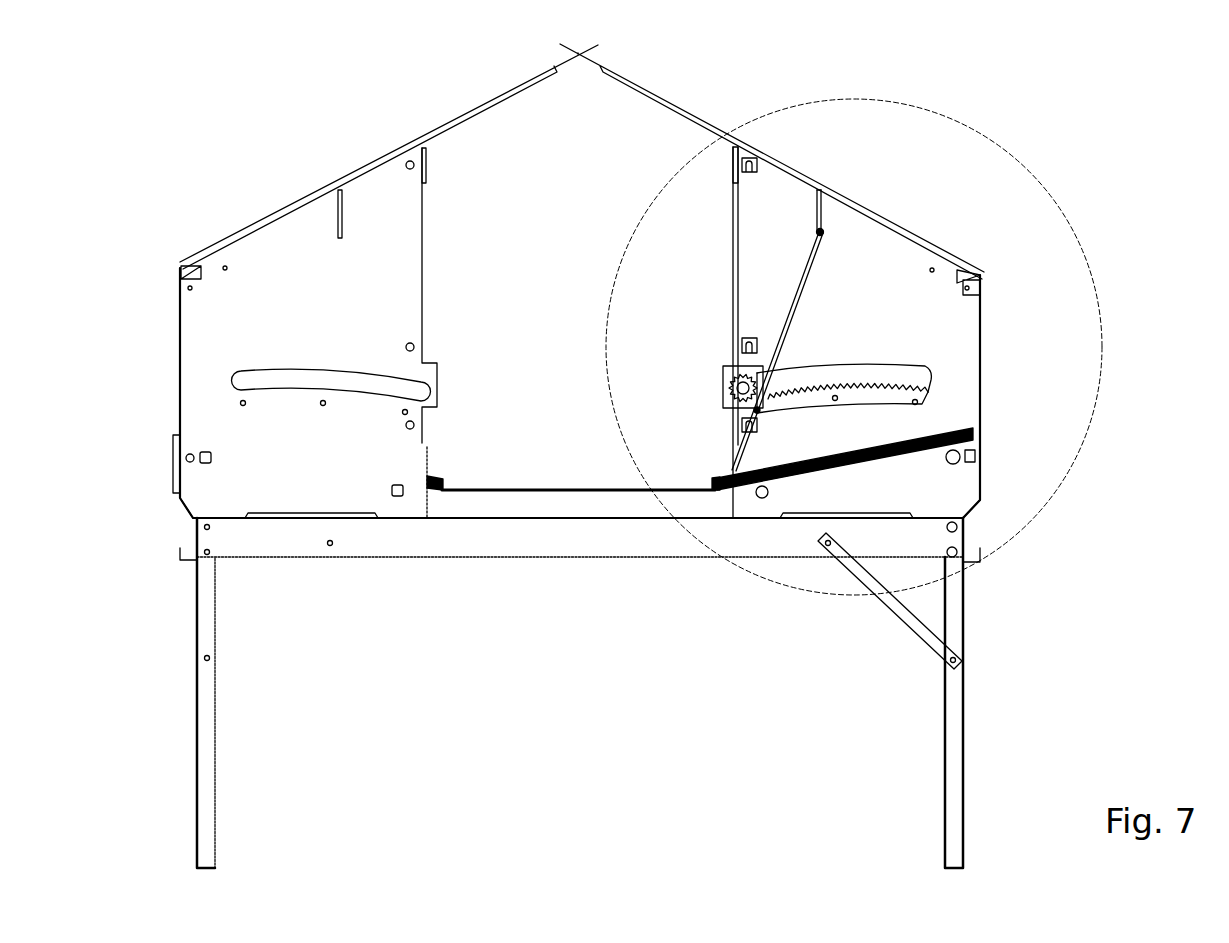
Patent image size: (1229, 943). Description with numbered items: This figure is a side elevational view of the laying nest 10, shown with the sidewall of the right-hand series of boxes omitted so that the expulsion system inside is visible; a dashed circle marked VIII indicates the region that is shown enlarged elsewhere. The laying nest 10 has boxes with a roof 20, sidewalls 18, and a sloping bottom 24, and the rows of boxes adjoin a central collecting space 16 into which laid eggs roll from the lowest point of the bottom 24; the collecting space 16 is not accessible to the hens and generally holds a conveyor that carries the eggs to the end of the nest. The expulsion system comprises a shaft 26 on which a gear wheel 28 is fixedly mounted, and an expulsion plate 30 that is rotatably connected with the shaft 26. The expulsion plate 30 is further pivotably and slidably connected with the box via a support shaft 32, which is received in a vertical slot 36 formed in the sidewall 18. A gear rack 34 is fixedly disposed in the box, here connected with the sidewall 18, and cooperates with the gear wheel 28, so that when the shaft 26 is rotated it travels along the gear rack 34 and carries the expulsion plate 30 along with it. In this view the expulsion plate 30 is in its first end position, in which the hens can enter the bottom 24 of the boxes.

The laying nest 10 is at (705, 103).
The collecting space 16 is at (515, 327).
The sidewall 18 is at (294, 329).
The roof 20 is at (280, 215).
The bottom 24 is at (922, 443).
The shaft 26 is at (740, 390).
The gear wheel 28 is at (740, 383).
The expulsion plate 30 is at (800, 283).
The support shaft 32 is at (823, 235).
The gear rack 34 is at (882, 398).
The vertical slot 36 is at (820, 212).
The detail view circle VIII is at (1053, 195).